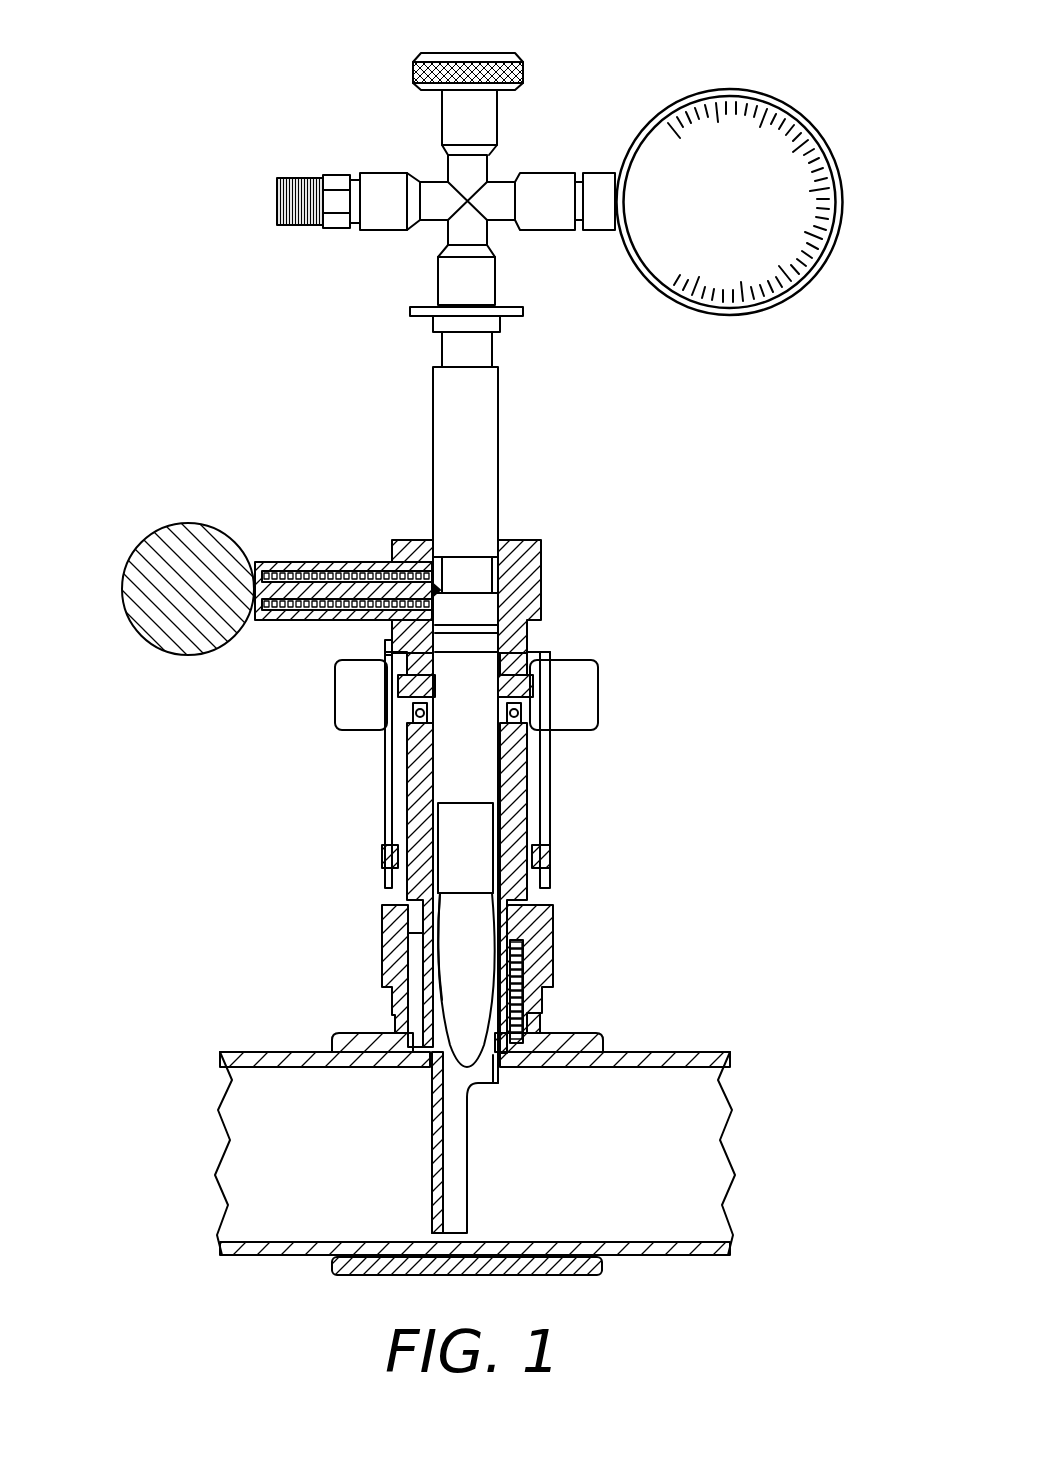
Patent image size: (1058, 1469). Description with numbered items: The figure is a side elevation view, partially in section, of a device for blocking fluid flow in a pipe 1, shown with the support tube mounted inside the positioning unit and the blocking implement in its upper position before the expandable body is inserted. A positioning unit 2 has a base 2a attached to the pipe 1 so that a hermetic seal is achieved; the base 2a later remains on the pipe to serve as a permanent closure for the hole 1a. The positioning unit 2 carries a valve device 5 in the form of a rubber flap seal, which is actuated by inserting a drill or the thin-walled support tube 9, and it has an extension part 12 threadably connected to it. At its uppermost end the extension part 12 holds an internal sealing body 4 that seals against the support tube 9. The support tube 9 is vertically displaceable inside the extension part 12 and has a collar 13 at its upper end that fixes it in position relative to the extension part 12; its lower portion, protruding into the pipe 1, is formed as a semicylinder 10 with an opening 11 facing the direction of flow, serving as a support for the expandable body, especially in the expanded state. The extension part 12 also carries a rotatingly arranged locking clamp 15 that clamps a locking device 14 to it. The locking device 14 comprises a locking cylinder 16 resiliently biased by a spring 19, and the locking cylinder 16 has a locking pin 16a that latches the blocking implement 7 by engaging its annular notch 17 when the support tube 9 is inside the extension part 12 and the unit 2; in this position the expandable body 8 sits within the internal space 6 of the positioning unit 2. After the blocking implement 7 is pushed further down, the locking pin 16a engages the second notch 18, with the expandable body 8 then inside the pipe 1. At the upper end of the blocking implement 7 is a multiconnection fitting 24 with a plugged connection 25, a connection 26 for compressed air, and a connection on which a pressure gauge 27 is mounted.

The pipe 1 is at (660, 1217).
The hole 1a is at (543, 1068).
The positioning unit 2 is at (540, 1025).
The base 2a is at (393, 1030).
The sealing body 4 is at (510, 717).
The valve device 5 is at (523, 950).
The internal space 6 is at (507, 1043).
The blocking implement 7 is at (480, 443).
The expandable body 8 is at (460, 1012).
The support tube 9 is at (445, 900).
The semicylinder 10 is at (455, 1195).
The opening 11 is at (473, 1083).
The extension part 12 is at (517, 810).
The collar 13 is at (517, 687).
The locking device 14 is at (403, 618).
The locking clamp 15 is at (385, 767).
The locking cylinder 16 is at (340, 593).
The locking pin 16a is at (460, 557).
The notch 17 is at (500, 571).
The notch 18 is at (442, 345).
The spring 19 is at (255, 570).
The multiconnection fitting 24 is at (467, 168).
The plugged connection 25 is at (445, 60).
The connection for compressed air 26 is at (300, 178).
The pressure gauge 27 is at (732, 177).